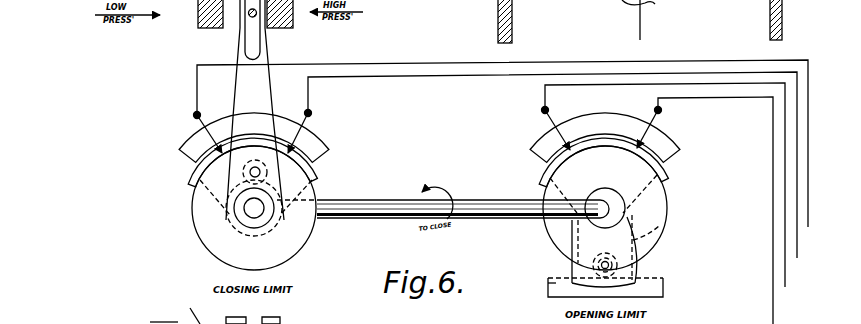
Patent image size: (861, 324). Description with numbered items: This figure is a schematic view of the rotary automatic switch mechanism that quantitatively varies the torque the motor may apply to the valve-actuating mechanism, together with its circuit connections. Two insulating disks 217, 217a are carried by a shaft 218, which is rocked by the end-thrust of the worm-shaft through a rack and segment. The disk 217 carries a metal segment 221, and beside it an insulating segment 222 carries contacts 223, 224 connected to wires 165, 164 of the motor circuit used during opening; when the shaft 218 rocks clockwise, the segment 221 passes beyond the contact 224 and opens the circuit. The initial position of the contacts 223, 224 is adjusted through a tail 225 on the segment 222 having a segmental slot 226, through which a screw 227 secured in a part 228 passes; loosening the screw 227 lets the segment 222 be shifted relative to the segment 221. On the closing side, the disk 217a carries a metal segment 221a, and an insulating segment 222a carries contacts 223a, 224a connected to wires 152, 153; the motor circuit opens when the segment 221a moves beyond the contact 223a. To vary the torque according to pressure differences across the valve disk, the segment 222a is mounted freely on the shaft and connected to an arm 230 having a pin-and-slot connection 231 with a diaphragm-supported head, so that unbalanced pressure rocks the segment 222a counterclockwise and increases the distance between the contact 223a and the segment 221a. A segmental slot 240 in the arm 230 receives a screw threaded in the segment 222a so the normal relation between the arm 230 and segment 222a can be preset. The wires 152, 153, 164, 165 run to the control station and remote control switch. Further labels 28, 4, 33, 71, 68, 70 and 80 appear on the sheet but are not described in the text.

The pin-and-slot connection 231 is at (255, 43).
The arm 230 is at (247, 90).
The contact 224a is at (195, 114).
The contact 223a is at (310, 113).
The insulating segment 222a is at (192, 147).
The metal segment 221a is at (200, 190).
The segmental slot 240 is at (266, 176).
The disk 217a is at (197, 232).
The shaft 218 is at (491, 199).
The disk 217 is at (552, 230).
The part 228 is at (553, 283).
The segmental slot 226 is at (663, 226).
The tail 225 is at (633, 272).
The screw 227 is at (661, 283).
The insulating segment 222 is at (664, 142).
The metal segment 221 is at (585, 150).
The contact 224 is at (546, 110).
The contact 223 is at (657, 110).
The valve casing wall 28 is at (513, 28).
The valve 4 is at (634, 35).
The valve 33 is at (661, 4).
The wire 153 is at (386, 64).
The wire 152 is at (398, 78).
The wire 165 is at (773, 219).
The wire 164 is at (773, 311).
The switch arm 71 is at (191, 307).
The contact 68 is at (243, 318).
The contact 70 is at (272, 318).
The switch 80 is at (164, 319).